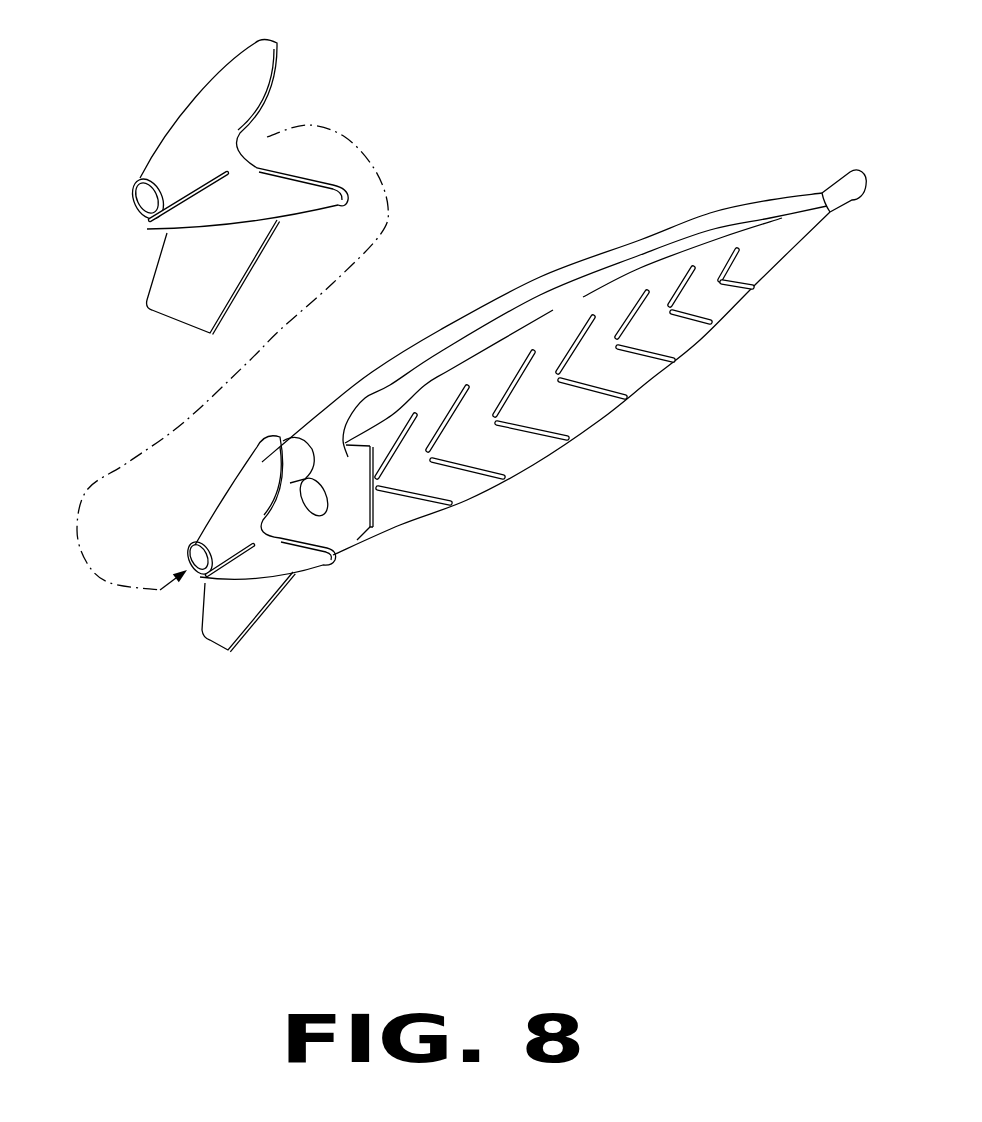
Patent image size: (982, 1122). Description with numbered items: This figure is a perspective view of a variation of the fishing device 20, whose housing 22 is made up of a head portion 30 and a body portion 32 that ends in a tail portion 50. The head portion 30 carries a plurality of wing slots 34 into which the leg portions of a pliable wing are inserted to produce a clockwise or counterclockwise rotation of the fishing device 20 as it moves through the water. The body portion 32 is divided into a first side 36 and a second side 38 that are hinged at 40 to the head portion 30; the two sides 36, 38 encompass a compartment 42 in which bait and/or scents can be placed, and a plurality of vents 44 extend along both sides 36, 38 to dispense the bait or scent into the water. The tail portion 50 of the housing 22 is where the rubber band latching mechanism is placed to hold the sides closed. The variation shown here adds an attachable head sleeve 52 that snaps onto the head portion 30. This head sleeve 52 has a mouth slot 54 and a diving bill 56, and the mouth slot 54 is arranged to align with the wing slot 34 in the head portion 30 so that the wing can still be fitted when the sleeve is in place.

The fishing device 20 is at (552, 195).
The housing 22 is at (702, 200).
The head portion 30 is at (337, 517).
The body portion 32 is at (468, 285).
The wing slot 34 is at (289, 463).
The first side 36 is at (410, 357).
The second side 38 is at (633, 370).
The hinge 40 is at (373, 505).
The compartment 42 is at (687, 337).
The vents 44 is at (600, 397).
The tail portion 50 is at (835, 184).
The head sleeve 52 is at (184, 80).
The mouth slot 54 is at (153, 231).
The diving bill 56 is at (183, 300).